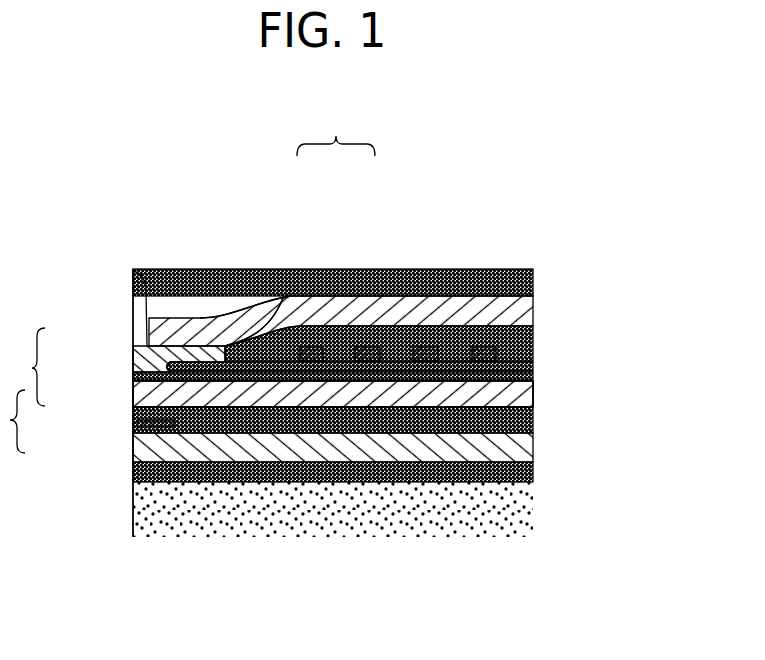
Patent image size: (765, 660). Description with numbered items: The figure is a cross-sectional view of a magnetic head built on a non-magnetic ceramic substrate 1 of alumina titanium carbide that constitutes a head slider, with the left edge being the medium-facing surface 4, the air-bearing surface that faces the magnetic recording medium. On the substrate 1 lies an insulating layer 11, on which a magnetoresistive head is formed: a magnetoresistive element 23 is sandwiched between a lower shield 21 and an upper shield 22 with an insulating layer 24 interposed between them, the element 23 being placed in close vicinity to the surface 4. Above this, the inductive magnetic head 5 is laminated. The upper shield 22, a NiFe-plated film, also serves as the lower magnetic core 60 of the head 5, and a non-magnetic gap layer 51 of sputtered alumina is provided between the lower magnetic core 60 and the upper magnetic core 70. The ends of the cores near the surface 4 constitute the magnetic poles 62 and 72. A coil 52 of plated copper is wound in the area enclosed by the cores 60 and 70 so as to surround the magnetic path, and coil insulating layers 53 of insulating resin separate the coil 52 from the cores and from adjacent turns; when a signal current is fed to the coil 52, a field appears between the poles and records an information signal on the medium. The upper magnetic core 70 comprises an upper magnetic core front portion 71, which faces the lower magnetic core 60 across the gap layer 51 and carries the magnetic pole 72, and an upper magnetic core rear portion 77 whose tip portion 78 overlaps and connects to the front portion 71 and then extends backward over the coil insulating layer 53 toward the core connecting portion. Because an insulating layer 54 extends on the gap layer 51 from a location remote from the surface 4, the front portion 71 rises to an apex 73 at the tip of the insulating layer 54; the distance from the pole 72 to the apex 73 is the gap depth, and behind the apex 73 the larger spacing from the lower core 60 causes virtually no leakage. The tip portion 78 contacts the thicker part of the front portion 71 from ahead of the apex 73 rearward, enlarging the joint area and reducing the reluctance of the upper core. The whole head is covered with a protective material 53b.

The non-magnetic ceramic substrate 1 is at (197, 510).
The medium-facing surface 4 is at (133, 508).
The inductive magnetic head 5 is at (32, 368).
The insulating layer 11 is at (263, 478).
The lower shield 21 is at (478, 448).
The upper shield 22 is at (318, 395).
The lower magnetic core 60 is at (333, 394).
The magnetoresistive element 23 is at (133, 423).
The insulating layer 24 is at (417, 423).
The non-magnetic gap layer 51 is at (490, 381).
The coil 52 is at (432, 348).
The coil insulating layers 53 is at (408, 327).
The protective material 53b is at (520, 281).
The insulating layer 54 is at (517, 353).
The magnetic pole 62 is at (133, 392).
The upper magnetic core 70 is at (336, 131).
The upper magnetic core front portion 71 is at (283, 302).
The magnetic pole 72 is at (135, 354).
The apex 73 is at (133, 273).
The upper magnetic core rear portion 77 is at (387, 305).
The tip portion 78 is at (207, 322).